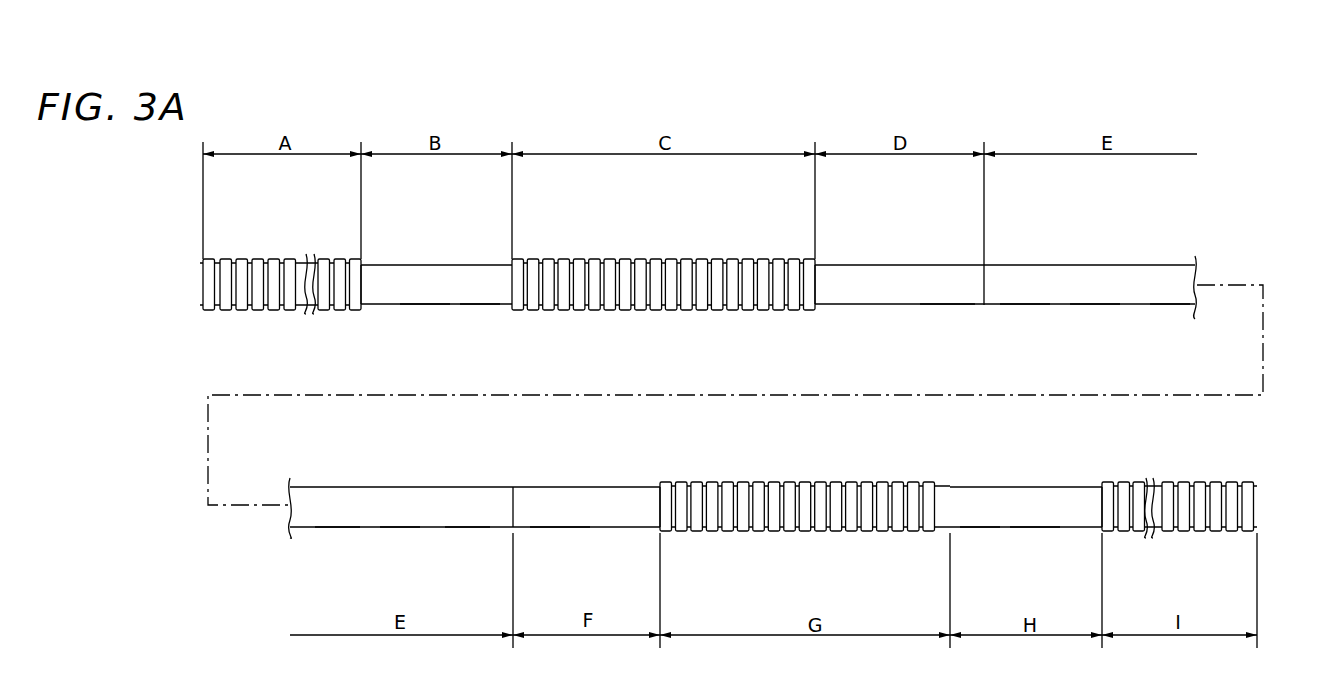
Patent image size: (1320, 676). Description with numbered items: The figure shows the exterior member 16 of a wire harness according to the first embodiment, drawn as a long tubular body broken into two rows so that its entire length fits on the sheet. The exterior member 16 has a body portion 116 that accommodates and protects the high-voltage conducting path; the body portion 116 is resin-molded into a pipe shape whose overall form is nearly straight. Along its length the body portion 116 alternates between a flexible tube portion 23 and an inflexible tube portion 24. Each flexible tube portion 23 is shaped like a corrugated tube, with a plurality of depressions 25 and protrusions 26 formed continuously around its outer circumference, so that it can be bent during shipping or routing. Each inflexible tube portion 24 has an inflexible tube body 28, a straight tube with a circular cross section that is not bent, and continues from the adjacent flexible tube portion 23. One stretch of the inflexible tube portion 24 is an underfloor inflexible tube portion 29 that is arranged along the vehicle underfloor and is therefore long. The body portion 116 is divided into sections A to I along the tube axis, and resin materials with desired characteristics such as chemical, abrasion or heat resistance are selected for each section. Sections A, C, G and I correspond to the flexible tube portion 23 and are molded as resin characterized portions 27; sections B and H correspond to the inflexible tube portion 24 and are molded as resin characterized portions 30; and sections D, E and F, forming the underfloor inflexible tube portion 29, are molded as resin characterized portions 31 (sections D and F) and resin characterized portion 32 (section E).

The exterior member 16 is at (1252, 183).
The body portion 116 is at (1166, 258).
The flexible tube portion 23 is at (296, 258).
The inflexible tube portion 24 is at (445, 264).
The depressions 25 is at (348, 311).
The protrusions 26 is at (360, 306).
The resin characterized portion 27 is at (231, 311).
The inflexible tube body 28 is at (481, 292).
The underfloor inflexible tube portion 29 is at (1176, 297).
The resin characterized portion 30 is at (425, 292).
The resin characterized portion 31 is at (949, 297).
The resin characterized portion 32 is at (1024, 297).